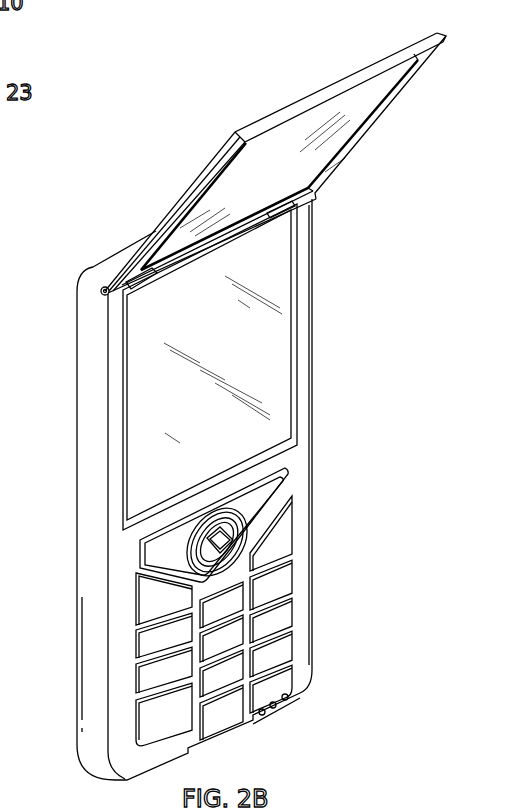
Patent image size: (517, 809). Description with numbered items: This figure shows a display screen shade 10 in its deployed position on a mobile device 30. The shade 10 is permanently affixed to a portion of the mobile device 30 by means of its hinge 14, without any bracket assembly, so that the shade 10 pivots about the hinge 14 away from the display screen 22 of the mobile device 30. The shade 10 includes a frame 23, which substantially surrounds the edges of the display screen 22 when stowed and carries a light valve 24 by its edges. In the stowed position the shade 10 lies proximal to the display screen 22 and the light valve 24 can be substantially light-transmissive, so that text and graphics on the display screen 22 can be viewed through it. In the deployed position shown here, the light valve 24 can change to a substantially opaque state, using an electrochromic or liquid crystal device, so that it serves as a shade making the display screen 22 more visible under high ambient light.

The shade 10 is at (368, 131).
The hinge 14 is at (101, 291).
The display screen 22 is at (273, 375).
The frame 23 is at (446, 34).
The light valve 24 is at (305, 163).
The mobile device 30 is at (77, 500).